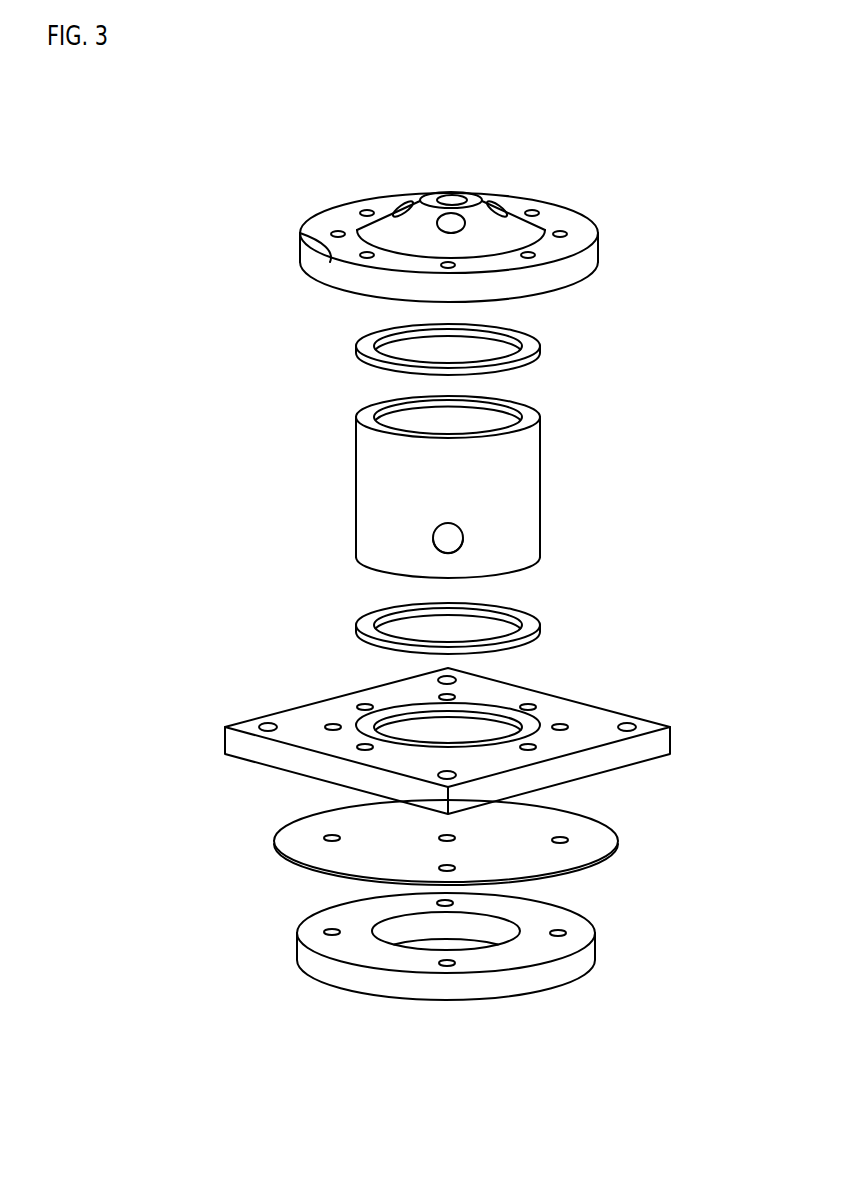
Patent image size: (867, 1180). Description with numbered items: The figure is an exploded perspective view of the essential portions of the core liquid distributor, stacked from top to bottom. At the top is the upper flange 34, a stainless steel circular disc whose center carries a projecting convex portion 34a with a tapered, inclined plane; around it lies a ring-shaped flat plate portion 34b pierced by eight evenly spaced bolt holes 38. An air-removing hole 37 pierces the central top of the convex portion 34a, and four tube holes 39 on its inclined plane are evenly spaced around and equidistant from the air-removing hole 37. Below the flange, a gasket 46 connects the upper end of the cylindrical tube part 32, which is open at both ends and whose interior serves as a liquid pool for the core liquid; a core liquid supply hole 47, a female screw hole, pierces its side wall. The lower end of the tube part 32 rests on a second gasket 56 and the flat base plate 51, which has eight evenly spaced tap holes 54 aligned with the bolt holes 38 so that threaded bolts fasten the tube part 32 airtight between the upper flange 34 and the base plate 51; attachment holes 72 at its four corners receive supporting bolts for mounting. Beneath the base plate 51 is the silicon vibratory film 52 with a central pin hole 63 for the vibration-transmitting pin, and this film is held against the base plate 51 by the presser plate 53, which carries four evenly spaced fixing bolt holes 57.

The tube part 32 is at (499, 487).
The upper flange 34 is at (447, 226).
The convex portion 34a is at (373, 228).
The flat plate portion 34b is at (553, 213).
The air-removing hole 37 is at (450, 199).
The bolt holes 38 is at (532, 258).
The tube holes 39 is at (450, 225).
The gasket 46 is at (537, 348).
The core liquid supply hole 47 is at (463, 537).
The base plate 51 is at (462, 715).
The vibratory film 52 is at (499, 842).
The presser plate 53 is at (513, 946).
The tap holes 54 is at (562, 727).
The gasket 56 is at (535, 627).
The fixing bolt holes 57 is at (566, 932).
The pin hole 63 is at (452, 837).
The attachment holes 72 is at (267, 725).